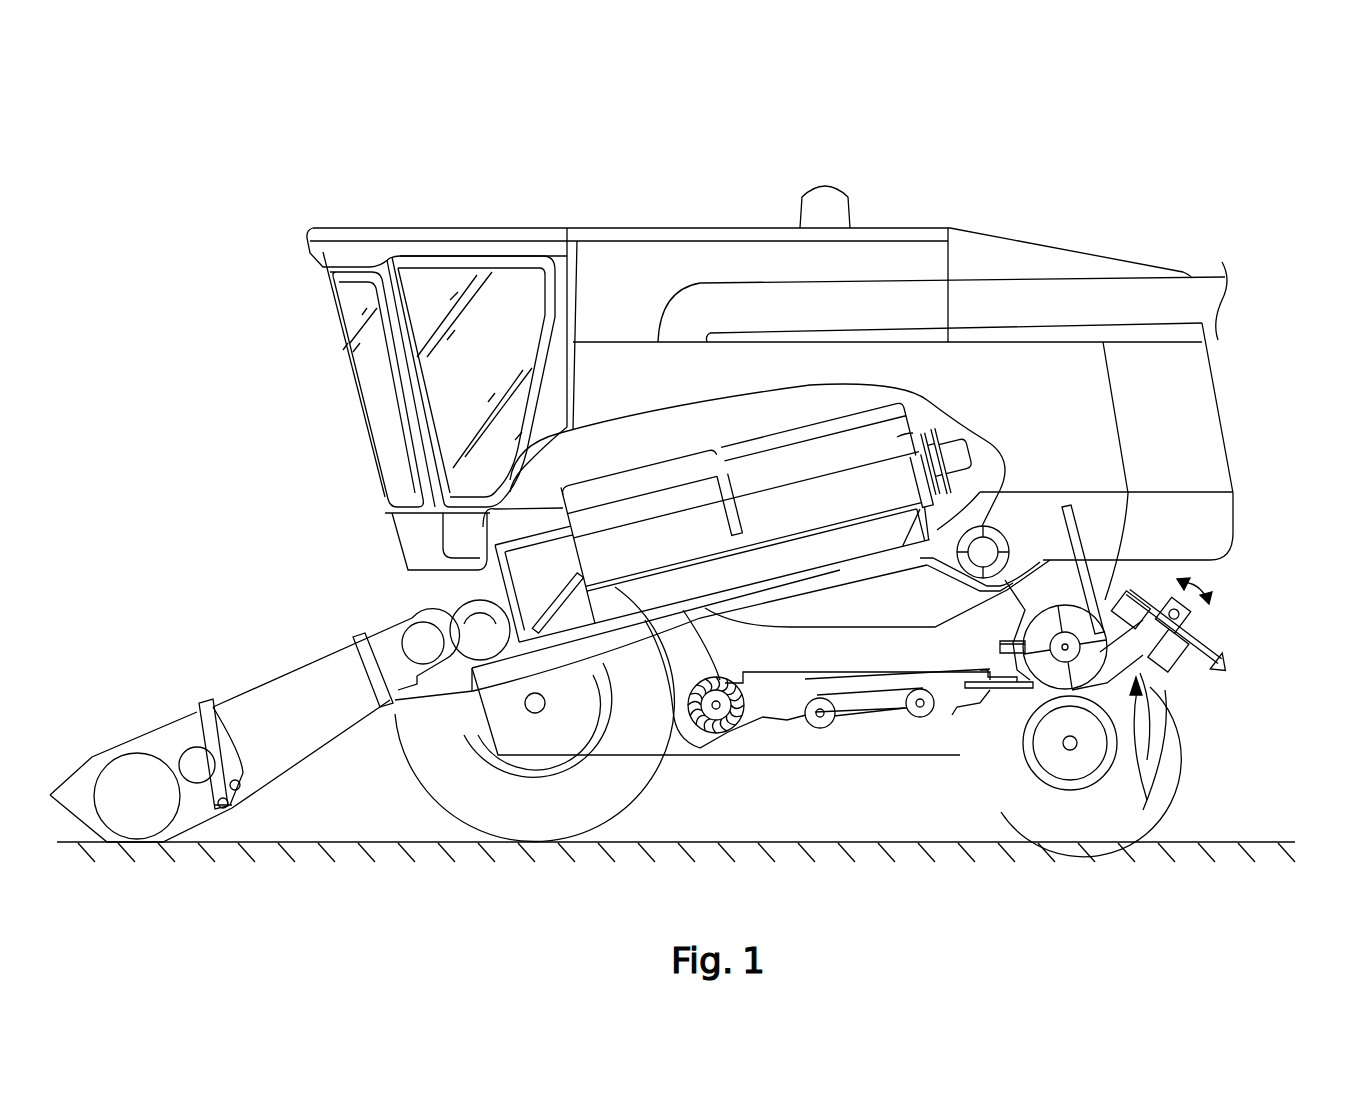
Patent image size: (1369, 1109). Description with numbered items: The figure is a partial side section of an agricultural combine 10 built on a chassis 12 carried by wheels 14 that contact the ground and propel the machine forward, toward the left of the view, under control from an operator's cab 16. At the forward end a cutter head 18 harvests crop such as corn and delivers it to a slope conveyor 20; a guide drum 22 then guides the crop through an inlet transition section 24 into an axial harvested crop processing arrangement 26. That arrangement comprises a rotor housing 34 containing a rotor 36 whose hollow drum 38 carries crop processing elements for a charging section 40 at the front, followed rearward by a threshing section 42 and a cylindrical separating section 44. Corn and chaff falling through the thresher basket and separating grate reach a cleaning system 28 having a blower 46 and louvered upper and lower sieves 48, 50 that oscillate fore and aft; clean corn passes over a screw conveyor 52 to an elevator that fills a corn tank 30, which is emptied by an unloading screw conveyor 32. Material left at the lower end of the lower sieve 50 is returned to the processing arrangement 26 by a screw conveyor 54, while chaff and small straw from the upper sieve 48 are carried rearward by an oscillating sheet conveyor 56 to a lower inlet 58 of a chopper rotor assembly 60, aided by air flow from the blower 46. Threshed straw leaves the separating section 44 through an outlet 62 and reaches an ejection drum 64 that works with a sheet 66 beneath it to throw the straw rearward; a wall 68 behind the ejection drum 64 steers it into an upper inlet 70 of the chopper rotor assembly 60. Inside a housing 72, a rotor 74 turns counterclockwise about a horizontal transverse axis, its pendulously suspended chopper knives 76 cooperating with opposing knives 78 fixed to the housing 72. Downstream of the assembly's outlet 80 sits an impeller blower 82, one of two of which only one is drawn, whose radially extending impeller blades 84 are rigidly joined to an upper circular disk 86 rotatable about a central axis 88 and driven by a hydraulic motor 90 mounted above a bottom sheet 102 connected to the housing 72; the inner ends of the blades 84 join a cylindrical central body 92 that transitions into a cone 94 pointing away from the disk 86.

The agricultural combine 10 is at (1024, 184).
The chassis 12 is at (752, 662).
The wheels 14 is at (437, 762).
The operator's cab 16 is at (437, 282).
The cutter head 18 is at (172, 740).
The slope conveyor 20 is at (277, 693).
The guide drum 22 is at (446, 618).
The inlet transition section 24 is at (532, 608).
The axial harvested crop processing arrangement 26 is at (793, 620).
The cleaning system 28 is at (872, 716).
The corn tank 30 is at (646, 292).
The unloading screw conveyor 32 is at (928, 318).
The rotor housing 34 is at (740, 702).
The rotor 36 is at (613, 600).
The hollow drum 38 is at (927, 398).
The charging section 40 is at (523, 508).
The threshing section 42 is at (622, 460).
The separating section 44 is at (795, 427).
The blower 46 is at (728, 735).
The upper sieve 48 is at (832, 678).
The lower sieve 50 is at (890, 713).
The screw conveyor 52 is at (820, 728).
The screw conveyor 54 is at (924, 716).
The oscillating sheet conveyor 56 is at (1007, 683).
The lower inlet 58 is at (1050, 688).
The chopper rotor assembly 60 is at (1160, 767).
The outlet 62 is at (958, 614).
The ejection drum 64 is at (985, 548).
The sheet 66 is at (967, 571).
The wall 68 is at (1073, 513).
The upper inlet 70 is at (1043, 580).
The housing 72 is at (1143, 795).
The rotor 74 is at (1117, 600).
The chopper knives 76 is at (1070, 600).
The opposing knives 78 is at (1000, 648).
The outlet 80 is at (1160, 700).
The impeller blower 82 is at (1256, 573).
The impeller blades 84 is at (1190, 660).
The upper circular disk 86 is at (1200, 560).
The central axes 88 is at (1210, 604).
The hydraulic motor 90 is at (1200, 623).
The cylindrical central body 92 is at (1147, 640).
The cone 94 is at (1150, 643).
The bottom sheet 102 is at (1147, 597).